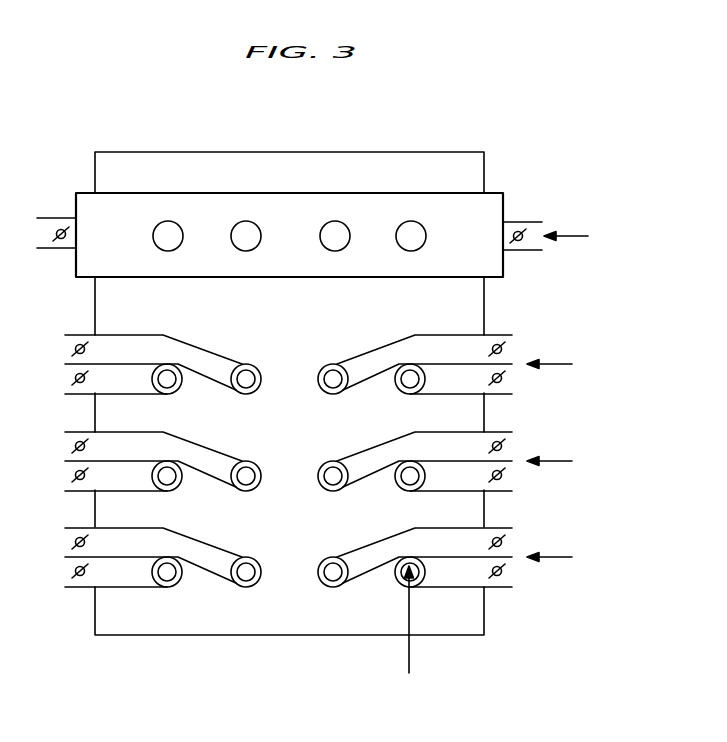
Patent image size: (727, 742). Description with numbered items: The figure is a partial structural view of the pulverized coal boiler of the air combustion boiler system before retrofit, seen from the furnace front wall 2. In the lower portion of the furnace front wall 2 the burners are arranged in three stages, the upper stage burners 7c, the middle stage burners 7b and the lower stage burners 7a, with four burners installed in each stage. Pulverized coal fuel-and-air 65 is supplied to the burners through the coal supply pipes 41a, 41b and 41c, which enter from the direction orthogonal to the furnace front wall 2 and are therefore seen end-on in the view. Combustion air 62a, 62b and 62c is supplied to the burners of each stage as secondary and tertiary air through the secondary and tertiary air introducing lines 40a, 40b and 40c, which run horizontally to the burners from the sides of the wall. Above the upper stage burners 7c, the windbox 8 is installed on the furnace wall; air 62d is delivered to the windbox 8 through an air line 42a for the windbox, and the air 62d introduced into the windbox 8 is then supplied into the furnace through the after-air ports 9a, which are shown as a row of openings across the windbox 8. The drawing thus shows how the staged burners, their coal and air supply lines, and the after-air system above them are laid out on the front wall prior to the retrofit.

The furnace front wall 2 is at (484, 305).
The windbox 8 is at (312, 193).
The after-air ports 9a is at (261, 232).
The air line for a windbox 42a is at (524, 221).
The air 62d is at (606, 236).
The secondary and tertiary air introducing line 40a is at (208, 545).
The secondary and tertiary air introducing line 40b is at (208, 449).
The secondary and tertiary air introducing line 40c is at (208, 352).
The lower stage burners 7a is at (321, 575).
The middle stage burners 7b is at (321, 479).
The upper stage burners 7c is at (321, 382).
The coal supply pipe 41a is at (409, 625).
The coal supply pipe 41b is at (459, 561).
The coal supply pipe 41c is at (477, 512).
The air 62a is at (588, 557).
The air 62b is at (588, 461).
The air 62c is at (588, 364).
The pulverized coal fuel-and-air 65 is at (409, 642).